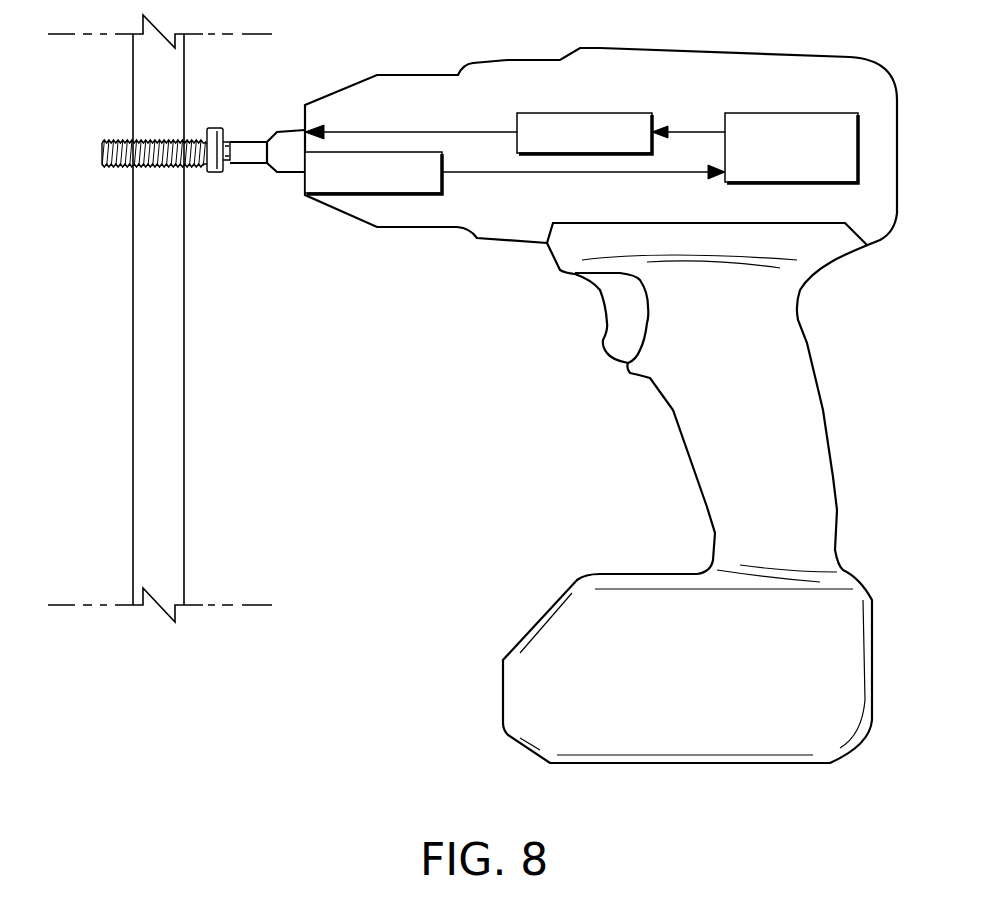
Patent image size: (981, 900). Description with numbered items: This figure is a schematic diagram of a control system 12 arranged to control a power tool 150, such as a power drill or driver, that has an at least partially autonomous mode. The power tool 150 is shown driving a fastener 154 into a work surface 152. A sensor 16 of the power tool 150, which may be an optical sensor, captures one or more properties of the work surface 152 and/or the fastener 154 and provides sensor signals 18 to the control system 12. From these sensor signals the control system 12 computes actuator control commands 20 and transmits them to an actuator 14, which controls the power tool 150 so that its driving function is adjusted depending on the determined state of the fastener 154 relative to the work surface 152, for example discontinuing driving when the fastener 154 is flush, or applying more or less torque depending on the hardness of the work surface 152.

The control system 12 is at (792, 113).
The actuator 14 is at (583, 113).
The sensor 16 is at (368, 194).
The sensor signals 18 is at (530, 173).
The actuator control commands 20 is at (697, 130).
The power tool 150 is at (678, 433).
The work surface 152 is at (184, 372).
The fastener 154 is at (222, 173).